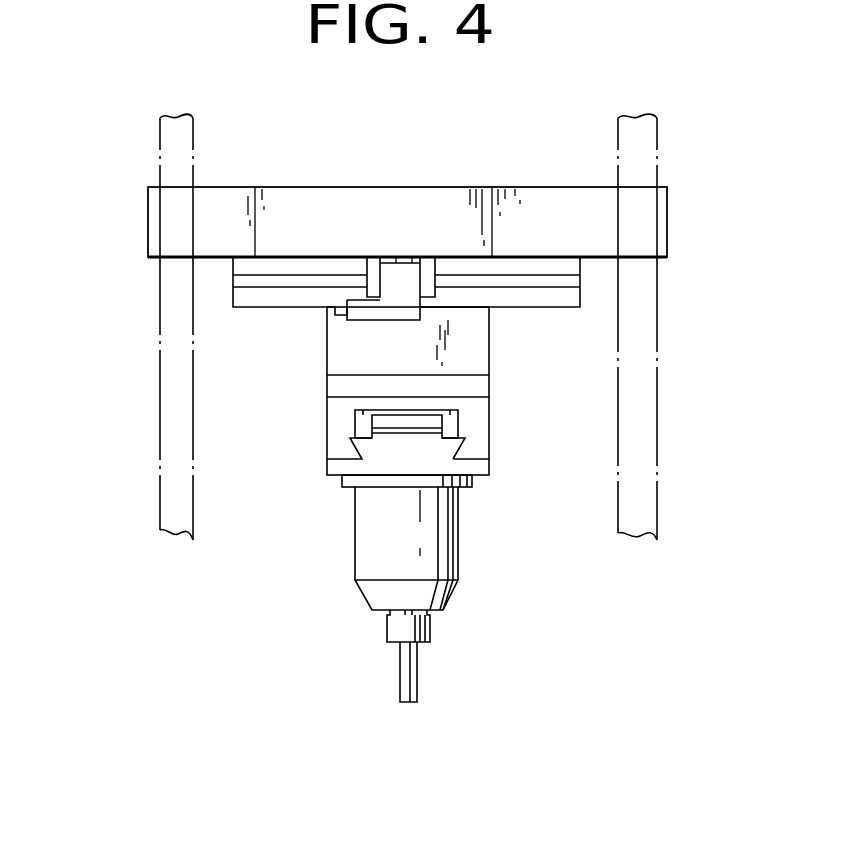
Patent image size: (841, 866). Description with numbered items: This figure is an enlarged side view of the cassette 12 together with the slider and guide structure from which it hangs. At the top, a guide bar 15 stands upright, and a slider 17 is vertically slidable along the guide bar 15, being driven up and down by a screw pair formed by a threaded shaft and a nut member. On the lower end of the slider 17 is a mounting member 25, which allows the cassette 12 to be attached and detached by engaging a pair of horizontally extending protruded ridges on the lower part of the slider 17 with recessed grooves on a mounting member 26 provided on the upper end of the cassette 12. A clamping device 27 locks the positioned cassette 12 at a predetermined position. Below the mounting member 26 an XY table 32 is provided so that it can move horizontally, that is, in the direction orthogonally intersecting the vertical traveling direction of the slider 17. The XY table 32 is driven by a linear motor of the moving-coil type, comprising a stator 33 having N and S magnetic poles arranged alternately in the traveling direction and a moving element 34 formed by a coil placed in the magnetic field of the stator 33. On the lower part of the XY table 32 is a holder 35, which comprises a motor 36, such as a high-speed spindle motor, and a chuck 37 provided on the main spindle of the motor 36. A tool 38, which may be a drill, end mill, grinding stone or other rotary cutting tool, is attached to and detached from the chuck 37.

The cassette 12 is at (532, 600).
The guide bar 15 is at (640, 147).
The slider 17 is at (530, 225).
The mounting member 25 is at (375, 263).
The mounting member 26 is at (238, 265).
The clamping device 27 is at (407, 282).
The XY table 32 is at (515, 393).
The stator 33 is at (390, 418).
The moving element 34 is at (358, 427).
The holder 35 is at (478, 540).
The motor 36 is at (383, 560).
The chuck 37 is at (395, 630).
The tool 38 is at (407, 670).